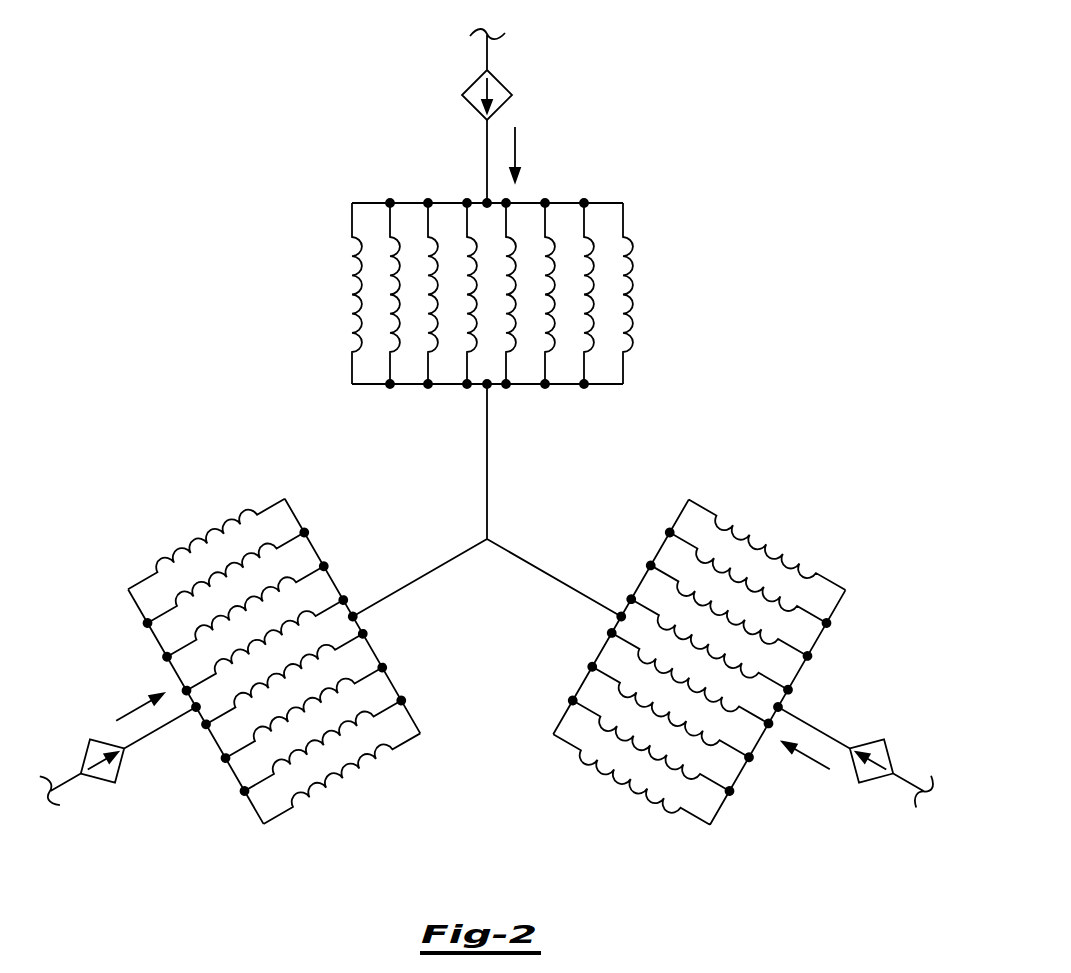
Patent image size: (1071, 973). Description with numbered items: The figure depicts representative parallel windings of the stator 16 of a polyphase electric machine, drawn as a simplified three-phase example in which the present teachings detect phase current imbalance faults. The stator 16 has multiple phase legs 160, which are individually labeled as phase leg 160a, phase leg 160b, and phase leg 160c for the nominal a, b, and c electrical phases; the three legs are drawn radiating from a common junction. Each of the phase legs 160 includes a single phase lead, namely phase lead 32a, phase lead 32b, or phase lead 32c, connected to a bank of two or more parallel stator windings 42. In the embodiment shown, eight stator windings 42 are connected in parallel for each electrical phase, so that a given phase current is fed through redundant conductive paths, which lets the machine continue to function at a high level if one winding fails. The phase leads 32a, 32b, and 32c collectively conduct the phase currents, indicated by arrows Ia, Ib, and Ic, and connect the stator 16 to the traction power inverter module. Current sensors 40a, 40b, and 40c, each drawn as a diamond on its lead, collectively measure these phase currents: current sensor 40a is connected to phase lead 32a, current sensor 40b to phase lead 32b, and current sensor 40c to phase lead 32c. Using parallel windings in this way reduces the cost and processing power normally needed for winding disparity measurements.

The stator 16 is at (787, 117).
The phase legs 160 is at (487, 484).
The phase leg 160a is at (148, 515).
The phase leg 160b is at (827, 515).
The phase leg 160c is at (649, 177).
The stator windings 42 is at (355, 323).
The phase lead 32a is at (487, 162).
The phase lead 32b is at (822, 728).
The phase lead 32c is at (156, 731).
The current sensor 40a is at (500, 80).
The current sensor 40b is at (875, 778).
The current sensor 40c is at (97, 778).